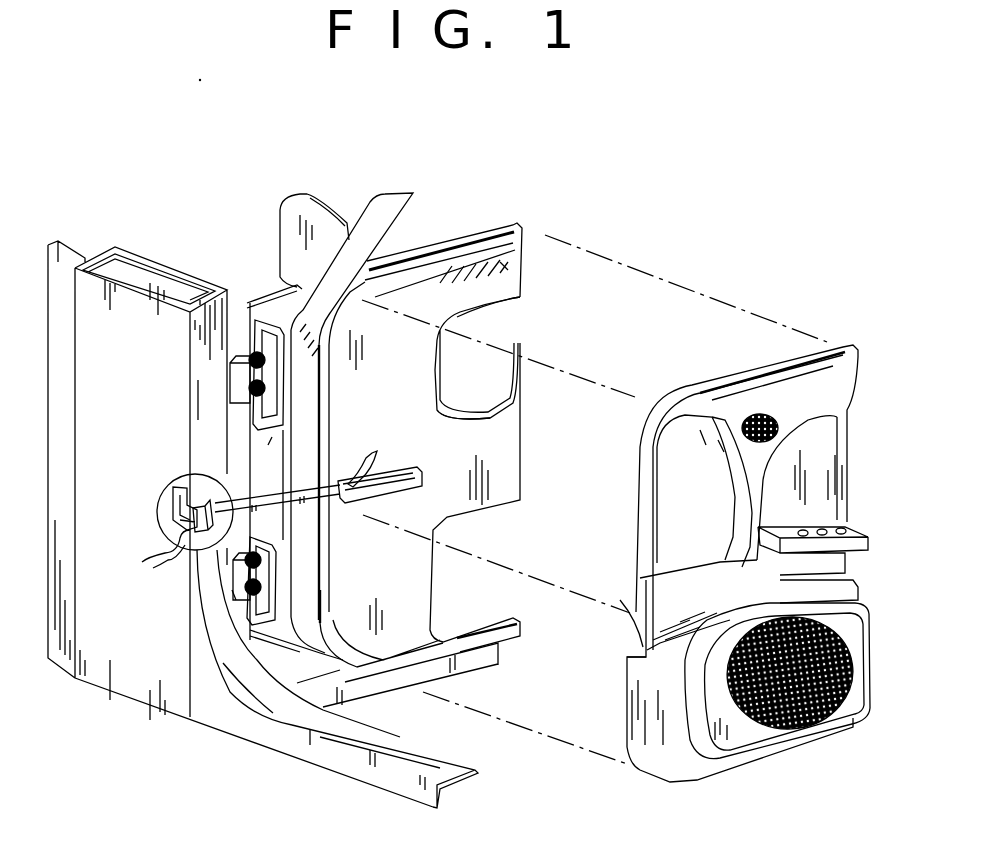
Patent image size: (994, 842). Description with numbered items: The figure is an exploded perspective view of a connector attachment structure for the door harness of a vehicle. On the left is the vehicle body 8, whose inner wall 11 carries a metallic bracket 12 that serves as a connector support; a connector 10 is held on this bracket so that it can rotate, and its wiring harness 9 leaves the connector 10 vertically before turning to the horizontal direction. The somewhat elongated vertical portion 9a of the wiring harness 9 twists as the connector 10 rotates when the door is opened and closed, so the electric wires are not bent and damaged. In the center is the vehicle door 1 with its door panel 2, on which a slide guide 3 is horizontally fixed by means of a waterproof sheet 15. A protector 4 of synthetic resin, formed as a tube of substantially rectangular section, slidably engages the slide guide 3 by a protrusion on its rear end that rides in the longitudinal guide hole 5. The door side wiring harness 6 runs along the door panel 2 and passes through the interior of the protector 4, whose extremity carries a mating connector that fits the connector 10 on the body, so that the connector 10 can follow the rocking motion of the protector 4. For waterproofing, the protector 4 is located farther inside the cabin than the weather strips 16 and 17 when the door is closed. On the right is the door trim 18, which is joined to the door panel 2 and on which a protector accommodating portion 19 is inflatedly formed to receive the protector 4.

The vehicle door 1 is at (452, 232).
The door panel 2 is at (503, 497).
The slide guide 3 is at (400, 475).
The protector 4 is at (310, 500).
The longitudinal guide hole 5 is at (420, 487).
The wiring harness 6 is at (365, 472).
The vehicle body 8 is at (100, 689).
The wiring harness 9 is at (150, 563).
The vertical portion 9a is at (182, 528).
The connector 10 is at (217, 557).
The inner wall 11 is at (152, 690).
The metallic bracket 12 is at (183, 502).
The waterproof sheet 15 is at (495, 262).
The weather strip 16 is at (233, 458).
The weather strip 17 is at (198, 368).
The door trim 18 is at (707, 382).
The protector accommodating portion 19 is at (633, 657).